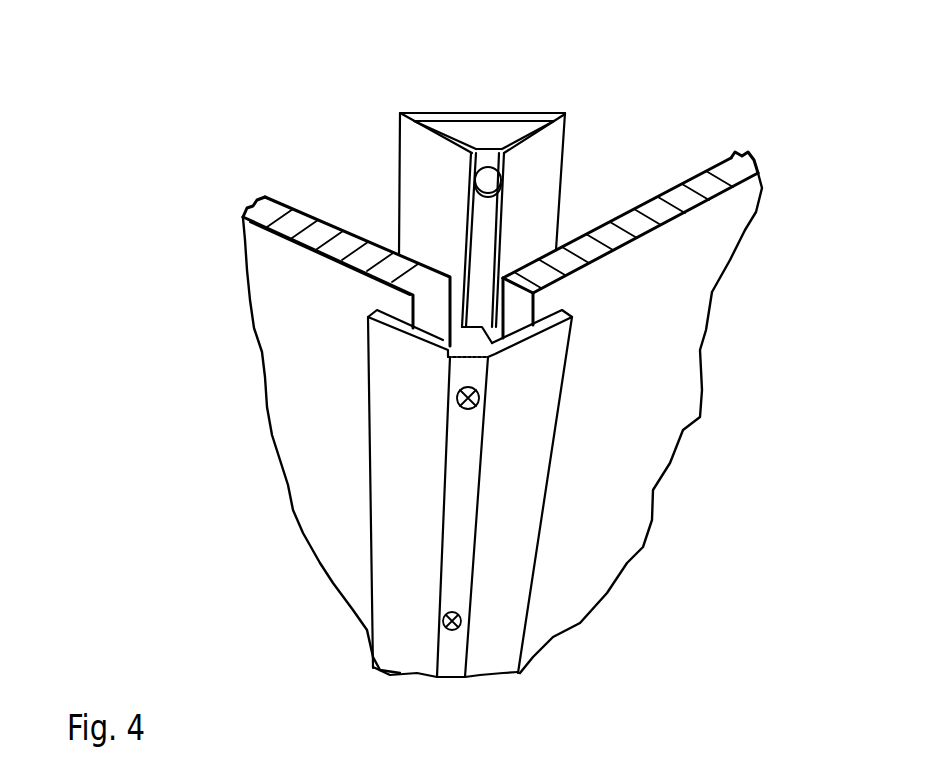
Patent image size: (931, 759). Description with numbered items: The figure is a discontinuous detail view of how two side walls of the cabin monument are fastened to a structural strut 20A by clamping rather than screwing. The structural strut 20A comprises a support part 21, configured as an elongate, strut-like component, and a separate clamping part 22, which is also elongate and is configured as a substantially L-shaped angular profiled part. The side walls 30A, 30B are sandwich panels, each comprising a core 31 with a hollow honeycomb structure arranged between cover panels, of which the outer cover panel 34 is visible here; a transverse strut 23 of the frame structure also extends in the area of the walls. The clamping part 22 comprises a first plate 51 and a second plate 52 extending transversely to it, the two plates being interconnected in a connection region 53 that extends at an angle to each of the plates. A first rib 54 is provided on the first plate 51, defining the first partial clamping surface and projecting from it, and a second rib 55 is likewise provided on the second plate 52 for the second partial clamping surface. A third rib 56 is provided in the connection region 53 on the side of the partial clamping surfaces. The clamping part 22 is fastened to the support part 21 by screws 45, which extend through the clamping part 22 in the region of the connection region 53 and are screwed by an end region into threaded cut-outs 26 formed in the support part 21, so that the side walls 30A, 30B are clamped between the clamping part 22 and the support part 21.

The structural strut 20A is at (565, 74).
The support part 21 is at (513, 199).
The clamping part 22 is at (486, 526).
The transverse strut 23 is at (498, 247).
The threaded cut-out 26 is at (487, 167).
The side wall 30A is at (670, 407).
The side wall 30B is at (310, 502).
The core 31 is at (293, 230).
The outer cover panel 34 is at (320, 253).
The screw 45 is at (477, 404).
The first plate 51 is at (520, 568).
The second plate 52 is at (392, 627).
The connection region 53 is at (450, 665).
The first rib 54 is at (473, 342).
The second rib 55 is at (368, 334).
The third rib 56 is at (504, 323).